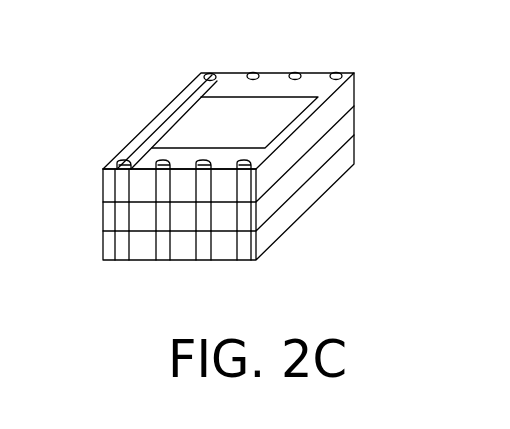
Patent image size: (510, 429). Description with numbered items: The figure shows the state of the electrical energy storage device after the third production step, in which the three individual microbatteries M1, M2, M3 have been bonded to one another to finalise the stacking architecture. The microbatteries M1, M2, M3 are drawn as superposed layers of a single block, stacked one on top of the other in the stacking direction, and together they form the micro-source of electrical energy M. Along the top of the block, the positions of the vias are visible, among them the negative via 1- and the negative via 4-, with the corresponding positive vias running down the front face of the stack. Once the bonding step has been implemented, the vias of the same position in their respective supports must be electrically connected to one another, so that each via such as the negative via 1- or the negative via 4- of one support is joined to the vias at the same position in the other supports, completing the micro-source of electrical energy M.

The negative via 1- is at (211, 77).
The negative via 4- is at (336, 74).
The microbattery M1 is at (360, 75).
The microbattery M2 is at (360, 107).
The microbattery M3 is at (360, 137).
The micro-source of electrical energy M is at (283, 166).